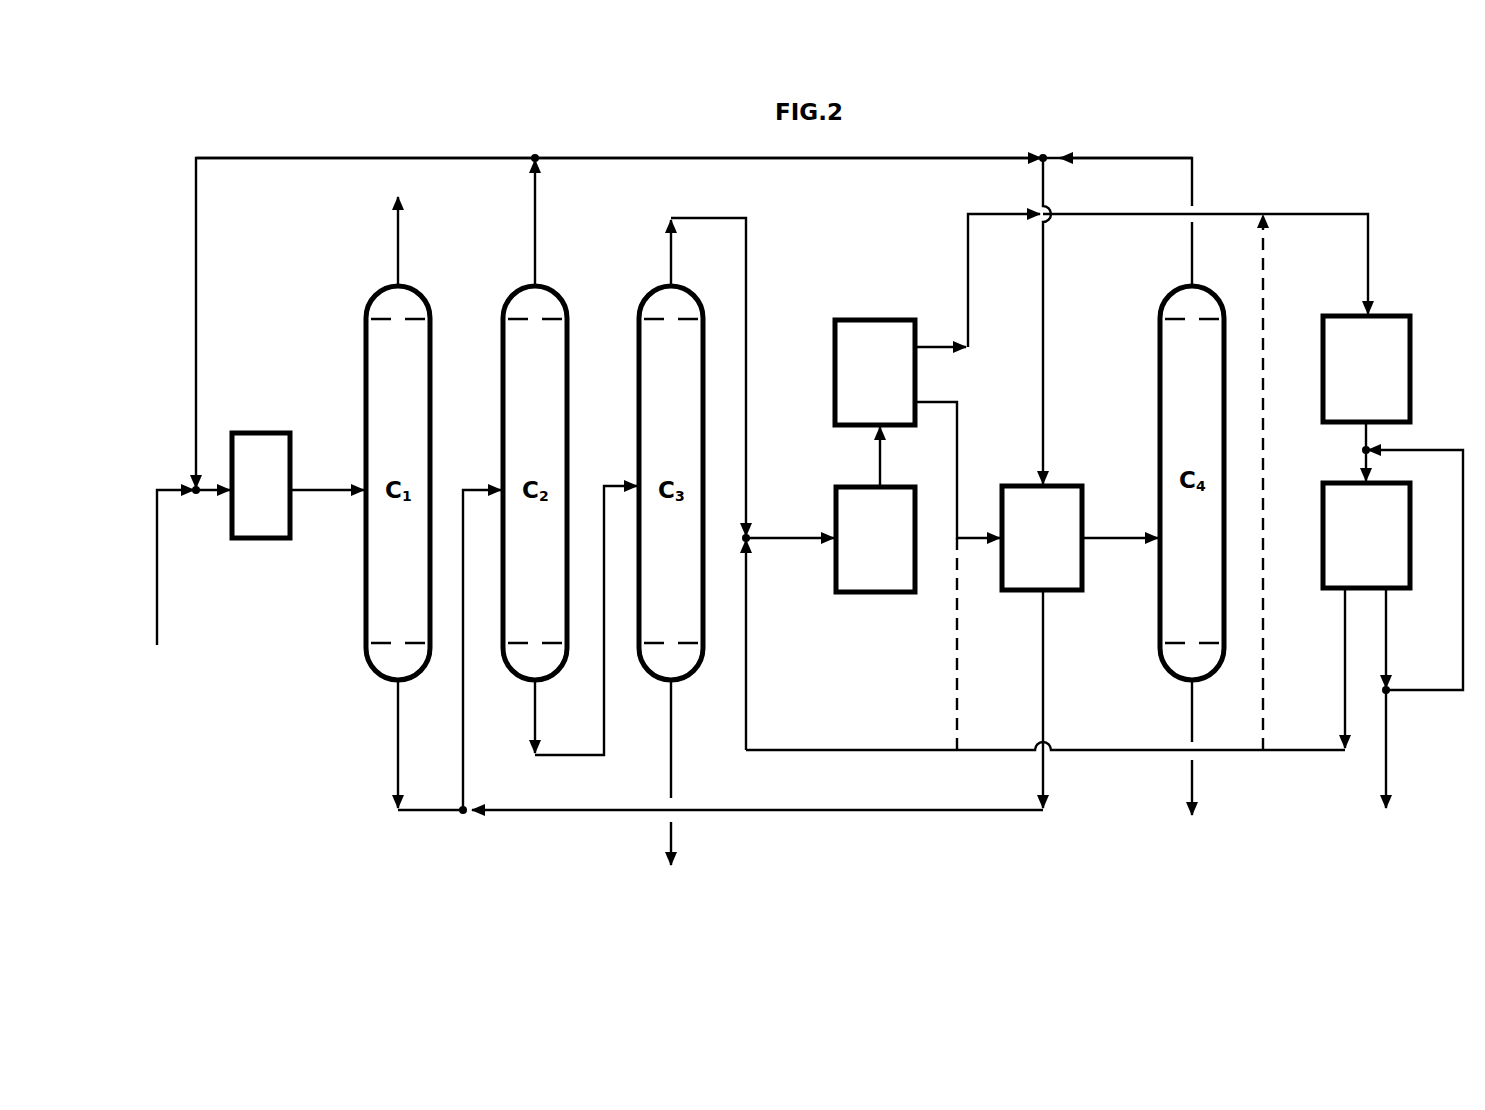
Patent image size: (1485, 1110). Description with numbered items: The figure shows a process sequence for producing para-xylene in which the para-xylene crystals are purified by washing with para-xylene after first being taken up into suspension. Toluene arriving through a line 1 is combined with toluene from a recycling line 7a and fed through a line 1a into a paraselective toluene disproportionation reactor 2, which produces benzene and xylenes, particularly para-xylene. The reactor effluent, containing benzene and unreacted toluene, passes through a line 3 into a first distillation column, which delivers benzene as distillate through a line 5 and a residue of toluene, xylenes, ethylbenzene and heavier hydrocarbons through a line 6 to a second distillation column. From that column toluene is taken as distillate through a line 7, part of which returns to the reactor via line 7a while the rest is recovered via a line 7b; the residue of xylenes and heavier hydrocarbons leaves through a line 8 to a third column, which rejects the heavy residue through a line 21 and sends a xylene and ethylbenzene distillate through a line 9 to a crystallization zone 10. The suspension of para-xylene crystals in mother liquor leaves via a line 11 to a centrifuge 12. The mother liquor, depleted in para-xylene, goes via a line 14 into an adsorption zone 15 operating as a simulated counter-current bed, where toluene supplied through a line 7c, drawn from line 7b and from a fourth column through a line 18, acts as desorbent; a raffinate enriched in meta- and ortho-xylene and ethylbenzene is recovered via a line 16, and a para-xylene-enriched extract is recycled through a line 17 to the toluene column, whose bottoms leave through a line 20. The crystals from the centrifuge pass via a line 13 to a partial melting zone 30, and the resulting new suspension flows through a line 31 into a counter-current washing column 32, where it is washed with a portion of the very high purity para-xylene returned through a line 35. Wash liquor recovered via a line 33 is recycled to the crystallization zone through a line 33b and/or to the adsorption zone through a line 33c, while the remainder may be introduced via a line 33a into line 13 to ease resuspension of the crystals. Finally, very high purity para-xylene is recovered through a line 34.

The line 1 is at (157, 583).
The line 1a is at (210, 493).
The paraselective toluene disproportionation reactor 2 is at (261, 485).
The line 3 is at (322, 492).
The line 5 is at (398, 255).
The line 6 is at (397, 725).
The line 7 is at (535, 255).
The recycling line 7a is at (196, 335).
The line 7b is at (592, 160).
The line 7c is at (1043, 255).
The line 8 is at (535, 718).
The line 9 is at (671, 255).
The crystallization zone 10 is at (875, 539).
The line 11 is at (880, 458).
The centrifuge 12 is at (875, 372).
The line 13 is at (968, 330).
The line 14 is at (957, 398).
The adsorption zone 15 is at (1042, 538).
The line 16 is at (1128, 540).
The line 17 is at (1043, 655).
The line 18 is at (1192, 252).
The bottoms line of column C4 20 is at (1192, 788).
The line 21 is at (671, 842).
The partial melting zone 30 is at (1366, 369).
The line 31 is at (1362, 458).
The counter-current washing column 32 is at (1366, 535).
The line 33 is at (1320, 752).
The line 33a is at (1263, 640).
The line 33b is at (746, 640).
The line 33c is at (957, 640).
The line 34 is at (1386, 768).
The line 35 is at (1420, 692).